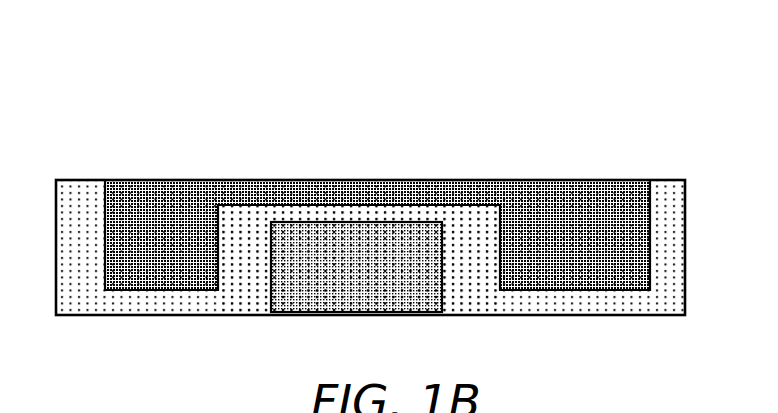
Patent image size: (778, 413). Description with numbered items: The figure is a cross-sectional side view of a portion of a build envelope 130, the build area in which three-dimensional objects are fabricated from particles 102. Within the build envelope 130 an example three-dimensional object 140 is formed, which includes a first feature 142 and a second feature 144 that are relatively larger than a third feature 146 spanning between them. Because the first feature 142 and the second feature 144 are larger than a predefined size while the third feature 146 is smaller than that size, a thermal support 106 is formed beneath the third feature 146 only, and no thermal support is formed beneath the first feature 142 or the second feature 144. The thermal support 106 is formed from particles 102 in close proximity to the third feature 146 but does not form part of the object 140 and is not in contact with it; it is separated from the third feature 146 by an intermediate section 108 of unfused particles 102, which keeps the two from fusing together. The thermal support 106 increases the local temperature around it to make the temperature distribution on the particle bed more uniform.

The build envelope 130 is at (370, 57).
The particles 102 is at (567, 308).
The intermediate section 108 is at (363, 172).
The 3D object 140 is at (358, 190).
The first feature 142 is at (153, 171).
The third feature 146 is at (283, 171).
The second feature 144 is at (560, 172).
The thermal support 106 is at (416, 213).